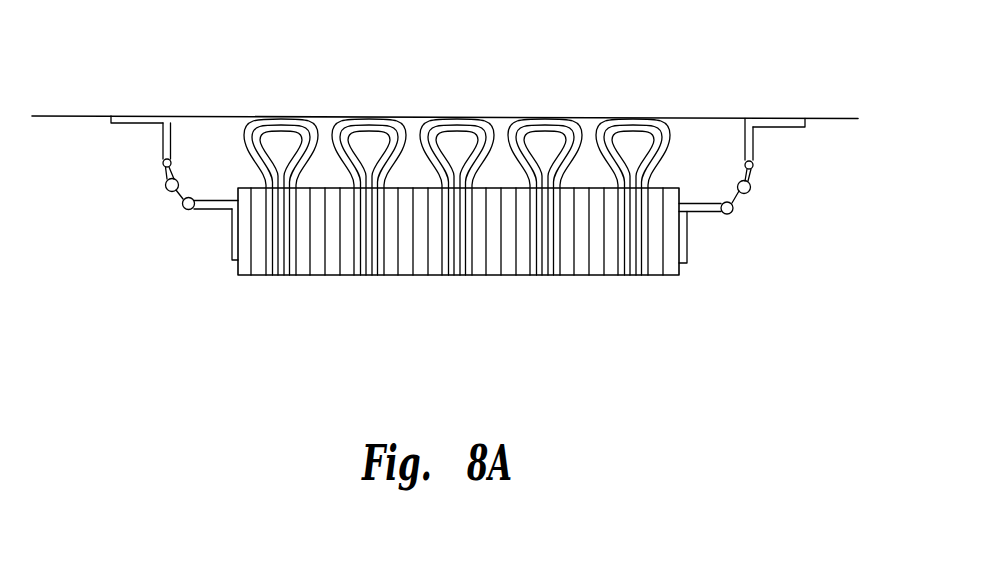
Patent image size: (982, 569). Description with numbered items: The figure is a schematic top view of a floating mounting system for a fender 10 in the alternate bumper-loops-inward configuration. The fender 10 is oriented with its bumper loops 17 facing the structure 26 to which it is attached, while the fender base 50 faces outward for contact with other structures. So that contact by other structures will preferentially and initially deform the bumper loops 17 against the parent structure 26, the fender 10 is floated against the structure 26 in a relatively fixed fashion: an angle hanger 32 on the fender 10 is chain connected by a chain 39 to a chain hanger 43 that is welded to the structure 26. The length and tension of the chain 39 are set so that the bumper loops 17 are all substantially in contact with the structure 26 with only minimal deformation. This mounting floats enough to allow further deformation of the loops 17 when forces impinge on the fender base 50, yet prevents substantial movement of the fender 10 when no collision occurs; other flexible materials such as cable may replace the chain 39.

The fender 10 is at (277, 307).
The bumper loops 17 is at (228, 165).
The structure 26 is at (634, 56).
The angle hanger 32 is at (688, 243).
The chain 39 is at (750, 192).
The chain hanger 43 is at (785, 127).
The fender base 50 is at (480, 313).